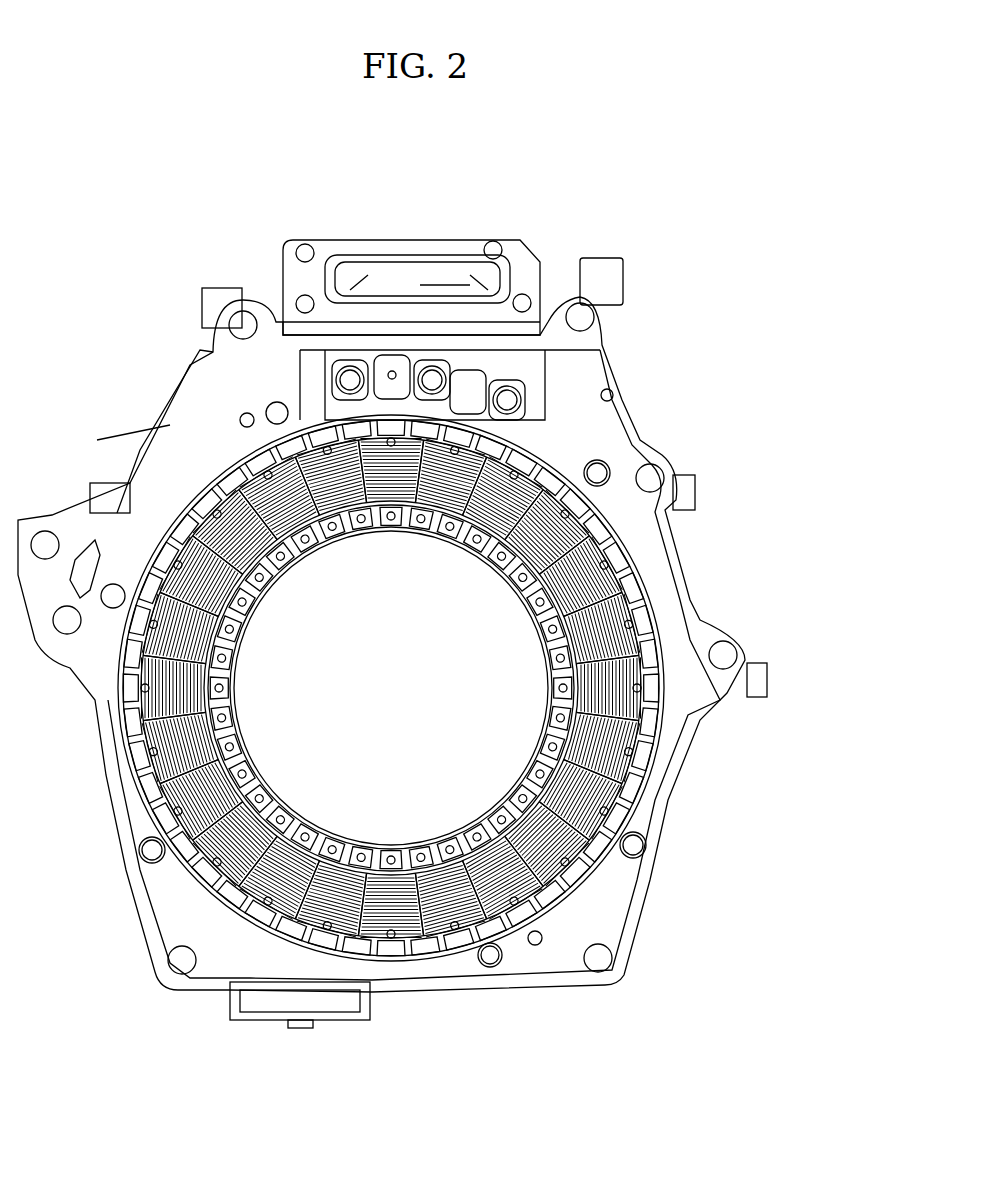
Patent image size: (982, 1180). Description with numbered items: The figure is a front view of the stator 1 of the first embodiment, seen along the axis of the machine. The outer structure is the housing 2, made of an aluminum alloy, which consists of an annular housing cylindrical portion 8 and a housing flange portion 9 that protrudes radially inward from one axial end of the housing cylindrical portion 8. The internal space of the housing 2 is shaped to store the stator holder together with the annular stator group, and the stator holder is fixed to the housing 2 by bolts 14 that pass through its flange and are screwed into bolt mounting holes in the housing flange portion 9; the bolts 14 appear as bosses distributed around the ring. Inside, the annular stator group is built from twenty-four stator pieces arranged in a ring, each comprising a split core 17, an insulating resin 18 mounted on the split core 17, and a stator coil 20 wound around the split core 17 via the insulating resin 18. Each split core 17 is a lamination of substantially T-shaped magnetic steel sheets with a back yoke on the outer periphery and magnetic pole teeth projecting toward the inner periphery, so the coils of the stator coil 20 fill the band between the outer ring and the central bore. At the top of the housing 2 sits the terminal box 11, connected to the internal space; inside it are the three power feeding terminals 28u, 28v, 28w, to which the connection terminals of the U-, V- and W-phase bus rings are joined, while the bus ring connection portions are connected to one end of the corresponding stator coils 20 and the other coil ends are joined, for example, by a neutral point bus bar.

The stator 1 is at (581, 168).
The housing 2 is at (396, 643).
The housing cylindrical portion 8 is at (675, 538).
The housing flange portion 9 is at (745, 515).
The terminal box 11 is at (397, 262).
The bolt 14 is at (605, 462).
The split core 17 is at (628, 757).
The insulating resin 18 is at (391, 688).
The stator coil 20 is at (598, 778).
The power feeding terminal 28u is at (350, 378).
The power feeding terminal 28v is at (432, 378).
The power feeding terminal 28w is at (507, 398).